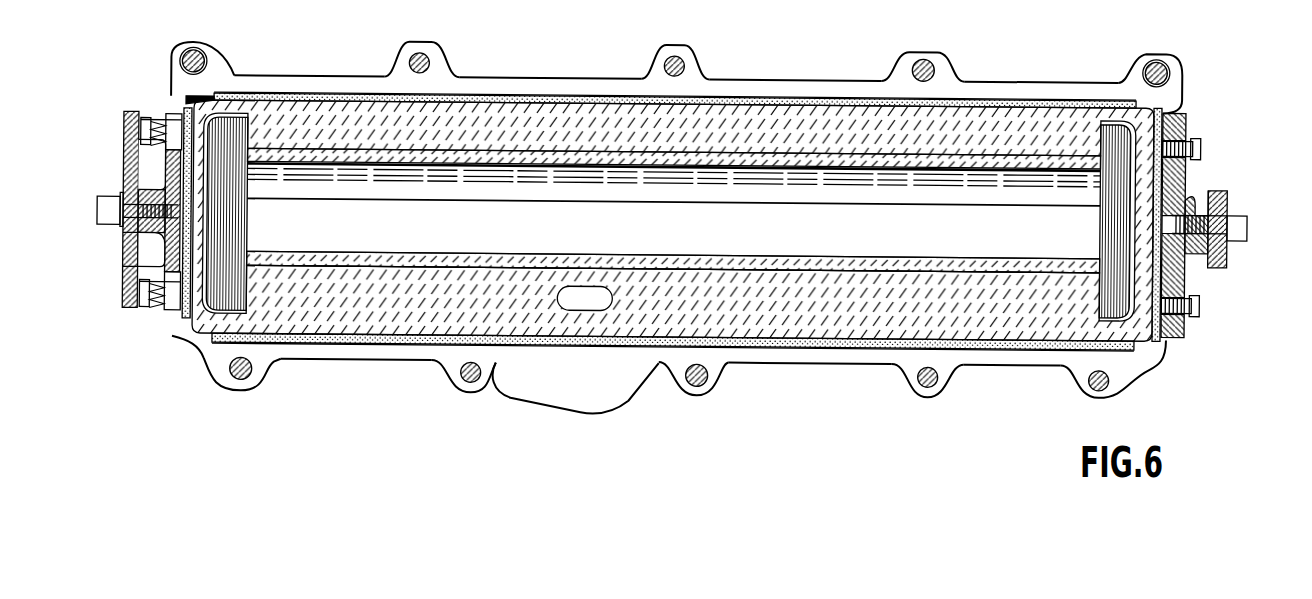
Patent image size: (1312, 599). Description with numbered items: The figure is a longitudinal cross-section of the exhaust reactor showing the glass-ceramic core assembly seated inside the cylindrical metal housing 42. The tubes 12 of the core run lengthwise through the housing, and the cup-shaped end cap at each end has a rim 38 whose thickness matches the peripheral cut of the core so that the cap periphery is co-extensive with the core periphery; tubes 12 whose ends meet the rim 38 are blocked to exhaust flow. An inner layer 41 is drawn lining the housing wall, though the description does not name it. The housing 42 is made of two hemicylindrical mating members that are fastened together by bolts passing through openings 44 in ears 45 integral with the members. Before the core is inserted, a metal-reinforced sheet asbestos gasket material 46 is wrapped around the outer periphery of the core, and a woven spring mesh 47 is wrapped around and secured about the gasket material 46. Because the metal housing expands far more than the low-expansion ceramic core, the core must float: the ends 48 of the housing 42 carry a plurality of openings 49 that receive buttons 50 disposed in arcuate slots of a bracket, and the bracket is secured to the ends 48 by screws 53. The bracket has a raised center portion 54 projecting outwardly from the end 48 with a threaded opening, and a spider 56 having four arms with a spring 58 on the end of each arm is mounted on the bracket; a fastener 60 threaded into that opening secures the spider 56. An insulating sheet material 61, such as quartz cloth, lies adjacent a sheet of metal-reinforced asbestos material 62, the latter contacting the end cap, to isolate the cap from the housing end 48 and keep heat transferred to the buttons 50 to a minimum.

The tubes 12 is at (815, 328).
The rim 38 is at (268, 100).
The liner 41 is at (283, 104).
The cylindrical metal housing 42 is at (786, 88).
The openings 44 is at (428, 58).
The ears 45 is at (408, 48).
The gasket material 46 is at (562, 96).
The woven spring mesh 47 is at (515, 94).
The ends of housing 48 is at (180, 332).
The openings 49 is at (180, 110).
The buttons 50 is at (172, 120).
The screws 53 is at (1202, 148).
The raised center portion 54 is at (125, 250).
The spider 56 is at (125, 145).
The spring 58 is at (125, 167).
The fastener 60 is at (96, 215).
The insulating sheet material 61 is at (176, 256).
The metal-reinforced asbestos material 62 is at (198, 92).